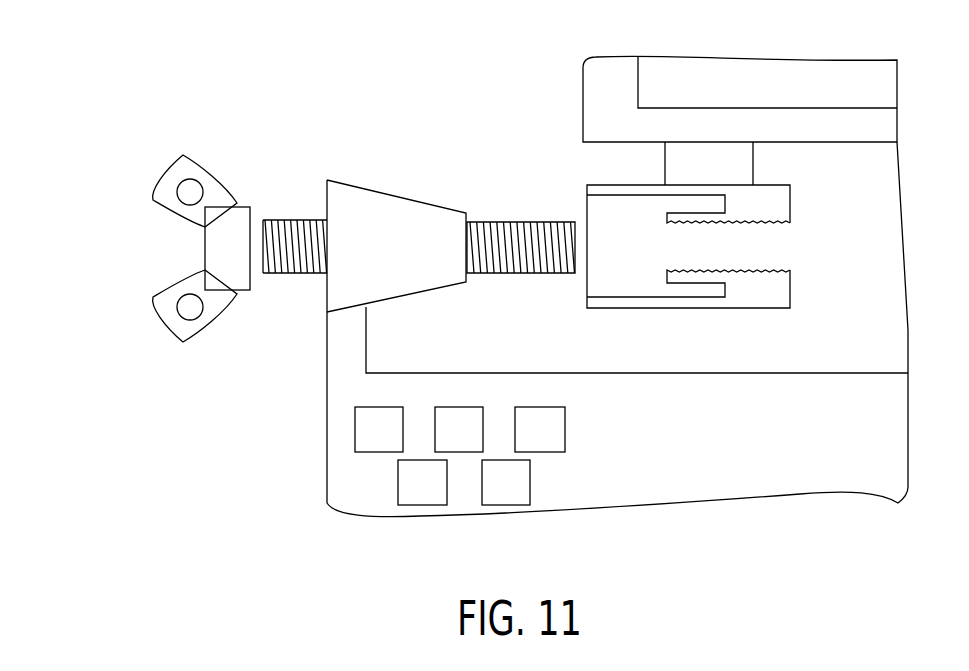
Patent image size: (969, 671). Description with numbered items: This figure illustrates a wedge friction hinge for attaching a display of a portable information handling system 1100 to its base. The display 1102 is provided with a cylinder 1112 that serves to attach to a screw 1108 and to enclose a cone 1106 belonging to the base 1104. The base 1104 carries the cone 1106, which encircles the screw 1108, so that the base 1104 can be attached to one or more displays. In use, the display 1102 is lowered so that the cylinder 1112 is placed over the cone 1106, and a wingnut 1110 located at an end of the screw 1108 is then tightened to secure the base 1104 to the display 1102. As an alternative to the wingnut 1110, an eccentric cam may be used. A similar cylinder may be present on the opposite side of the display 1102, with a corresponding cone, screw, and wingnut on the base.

The portable information handling system 1100 is at (178, 83).
The display 1102 is at (583, 84).
The base 1104 is at (327, 468).
The cone 1106 is at (380, 190).
The screw 1108 is at (283, 219).
The wingnut 1110 is at (152, 303).
The cylinder 1112 is at (790, 288).